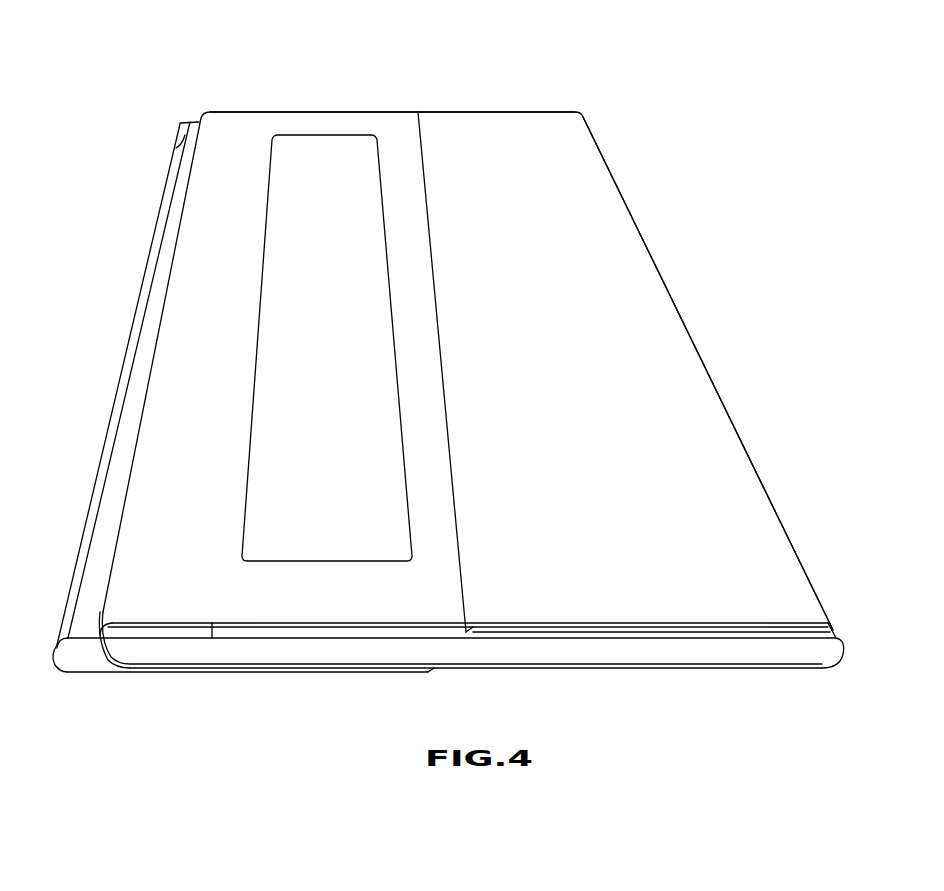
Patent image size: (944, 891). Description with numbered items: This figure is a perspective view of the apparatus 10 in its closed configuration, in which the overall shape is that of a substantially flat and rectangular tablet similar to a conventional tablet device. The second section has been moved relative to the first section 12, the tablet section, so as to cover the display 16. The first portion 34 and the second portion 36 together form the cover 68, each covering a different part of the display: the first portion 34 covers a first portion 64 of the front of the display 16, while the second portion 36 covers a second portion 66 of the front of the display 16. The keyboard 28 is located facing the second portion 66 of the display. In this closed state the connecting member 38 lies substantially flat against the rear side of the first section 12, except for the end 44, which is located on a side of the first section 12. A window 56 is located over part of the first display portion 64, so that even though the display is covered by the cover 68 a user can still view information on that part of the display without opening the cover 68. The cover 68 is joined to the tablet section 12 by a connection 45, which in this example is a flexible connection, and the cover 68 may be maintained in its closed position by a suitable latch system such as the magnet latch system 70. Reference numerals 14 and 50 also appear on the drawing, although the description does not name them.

The apparatus 10 is at (687, 190).
The first section 12 is at (538, 650).
The display panel / top cover 14 is at (703, 386).
The display 16 is at (310, 148).
The keyboard 28 is at (680, 470).
The first portion 34 is at (180, 607).
The second portion 36 is at (648, 598).
The connecting member 38 is at (330, 675).
The end 44 is at (78, 677).
The connection 45 is at (117, 587).
The spine 50 is at (187, 125).
The window 56 is at (298, 545).
The first portion of the front of the display 64 is at (337, 172).
The second portion of the front of the display 66 is at (533, 145).
The cover 68 is at (656, 313).
The magnet latch system 70 is at (587, 150).